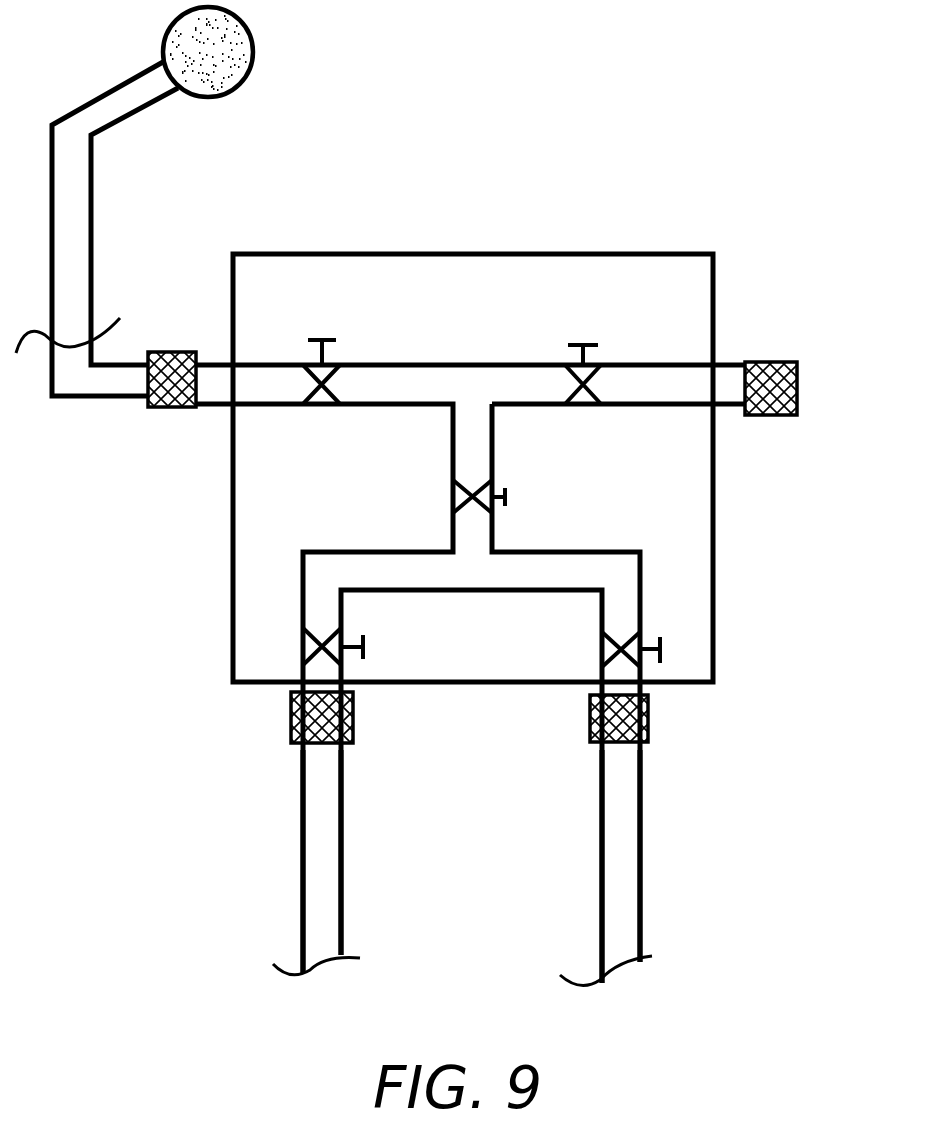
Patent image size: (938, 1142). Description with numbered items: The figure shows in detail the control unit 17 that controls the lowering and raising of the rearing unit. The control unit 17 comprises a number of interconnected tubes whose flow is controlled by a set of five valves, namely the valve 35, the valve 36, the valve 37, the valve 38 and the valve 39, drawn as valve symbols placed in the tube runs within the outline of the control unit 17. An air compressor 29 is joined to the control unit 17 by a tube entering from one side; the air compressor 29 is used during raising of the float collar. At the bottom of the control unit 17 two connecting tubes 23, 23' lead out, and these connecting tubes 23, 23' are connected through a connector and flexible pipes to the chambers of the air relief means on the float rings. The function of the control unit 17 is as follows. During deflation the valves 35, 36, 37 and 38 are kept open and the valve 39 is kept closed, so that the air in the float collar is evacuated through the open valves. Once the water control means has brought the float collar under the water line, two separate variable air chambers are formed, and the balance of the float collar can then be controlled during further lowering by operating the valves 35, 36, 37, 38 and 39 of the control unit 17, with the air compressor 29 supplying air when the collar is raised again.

The control unit 17 is at (668, 251).
The air compressor 29 is at (253, 48).
The valve 39 is at (343, 346).
The valve 38 is at (597, 348).
The valve 37 is at (510, 483).
The valve 36 is at (281, 643).
The valve 35 is at (675, 638).
The connecting tube 23 is at (350, 862).
The connecting tube 23' is at (648, 867).